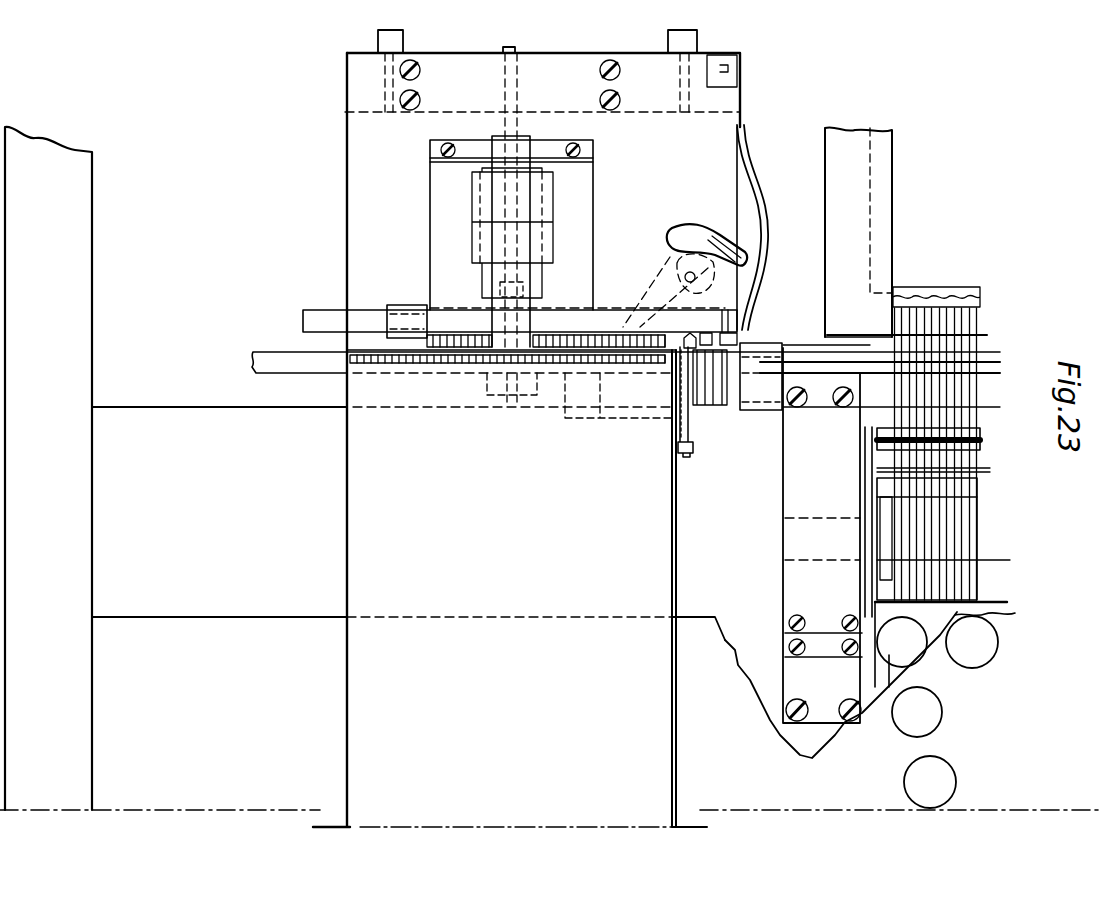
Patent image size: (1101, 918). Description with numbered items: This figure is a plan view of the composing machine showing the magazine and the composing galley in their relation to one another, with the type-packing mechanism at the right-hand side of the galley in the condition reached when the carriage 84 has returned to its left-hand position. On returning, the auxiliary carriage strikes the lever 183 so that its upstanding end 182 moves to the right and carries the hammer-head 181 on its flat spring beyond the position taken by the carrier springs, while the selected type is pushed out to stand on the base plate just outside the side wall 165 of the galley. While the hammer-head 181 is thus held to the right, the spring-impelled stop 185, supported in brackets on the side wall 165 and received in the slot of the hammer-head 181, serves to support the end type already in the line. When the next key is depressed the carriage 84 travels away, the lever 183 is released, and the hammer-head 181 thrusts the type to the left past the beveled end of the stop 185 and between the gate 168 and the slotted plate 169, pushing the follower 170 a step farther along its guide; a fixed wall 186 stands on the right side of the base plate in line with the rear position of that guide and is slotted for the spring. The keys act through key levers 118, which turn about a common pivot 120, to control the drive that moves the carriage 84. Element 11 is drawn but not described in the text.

The web/sheet guide rollers 11 is at (1010, 612).
The carriage 84 is at (572, 402).
The key levers 118 is at (972, 580).
The common pivot 120 is at (1008, 562).
The side wall of the galley 165 is at (678, 501).
The gate 168 is at (372, 365).
The slotted plate 169 is at (438, 310).
The follower 170 is at (410, 310).
The hammer-head 181 is at (750, 310).
The upstanding end of lever 182 is at (726, 235).
The lever 183 is at (668, 297).
The stop 185 is at (692, 423).
The fixed wall 186 is at (741, 125).